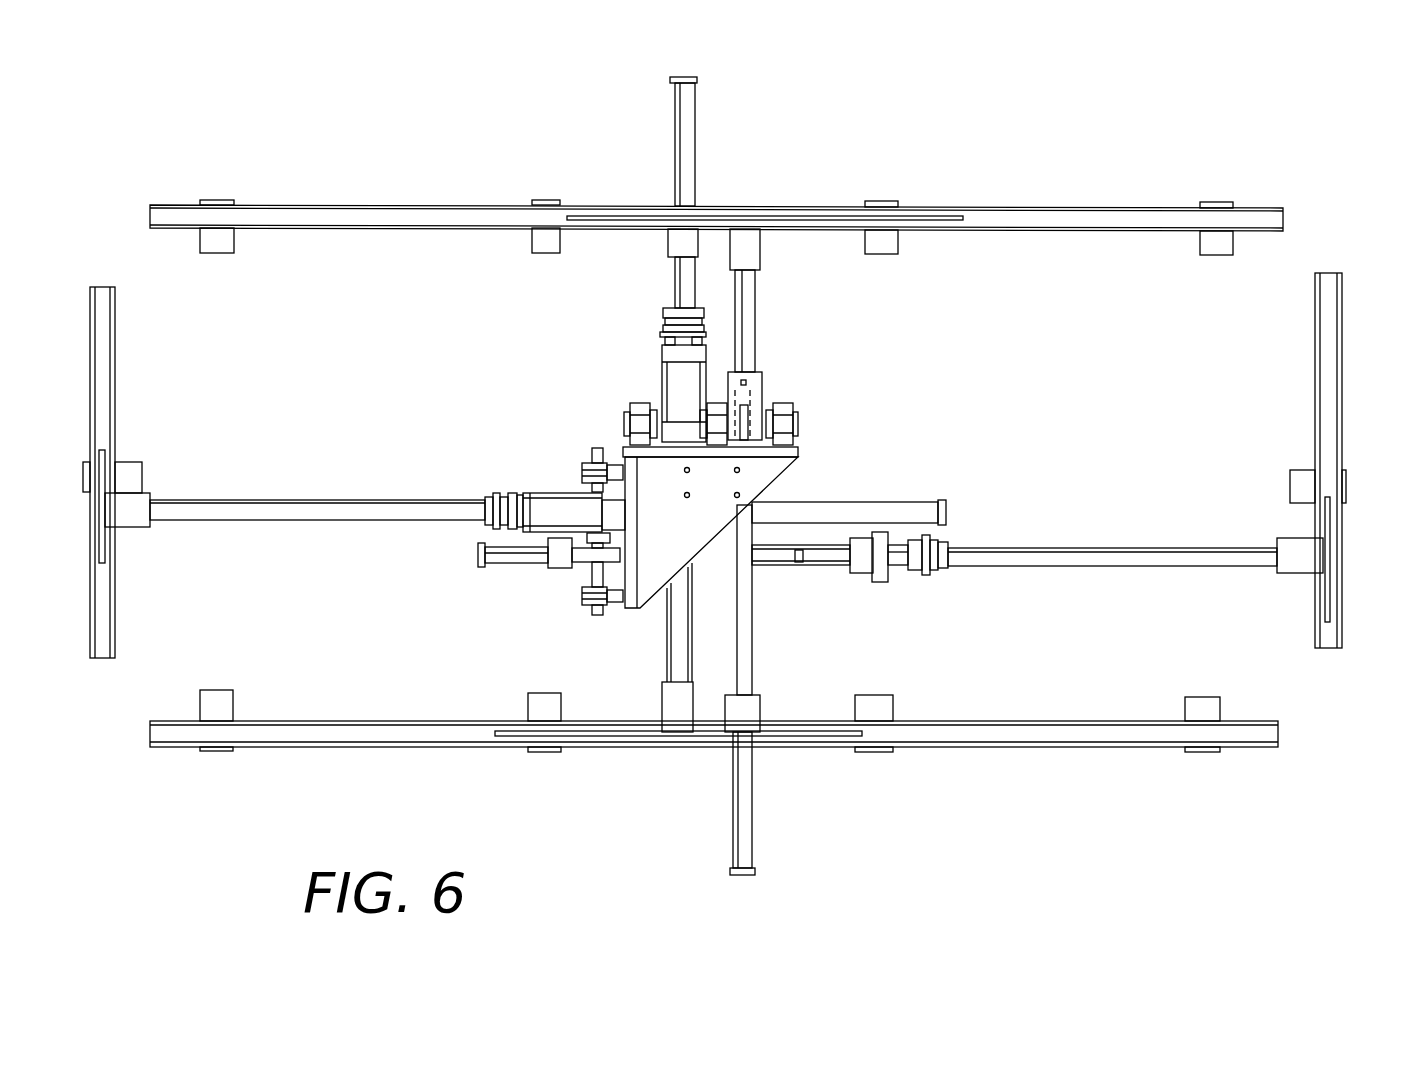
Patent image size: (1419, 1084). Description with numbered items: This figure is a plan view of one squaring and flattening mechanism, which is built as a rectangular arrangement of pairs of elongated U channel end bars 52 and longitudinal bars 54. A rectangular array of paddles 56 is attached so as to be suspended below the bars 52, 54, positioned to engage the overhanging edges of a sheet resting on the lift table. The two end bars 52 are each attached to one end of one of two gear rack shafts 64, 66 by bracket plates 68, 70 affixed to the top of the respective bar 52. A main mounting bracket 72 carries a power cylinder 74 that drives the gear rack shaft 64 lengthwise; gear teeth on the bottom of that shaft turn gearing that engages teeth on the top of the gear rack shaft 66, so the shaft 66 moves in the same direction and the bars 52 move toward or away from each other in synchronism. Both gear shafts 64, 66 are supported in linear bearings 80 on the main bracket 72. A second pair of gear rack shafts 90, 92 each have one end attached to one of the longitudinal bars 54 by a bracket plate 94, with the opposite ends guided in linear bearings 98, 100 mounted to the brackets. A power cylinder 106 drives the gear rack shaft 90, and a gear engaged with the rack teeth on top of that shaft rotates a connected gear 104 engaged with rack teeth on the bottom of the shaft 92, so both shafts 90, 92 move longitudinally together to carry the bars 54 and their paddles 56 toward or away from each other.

The end bar 52 is at (120, 330).
The longitudinal bar 54 is at (1095, 207).
The paddle 56 is at (232, 200).
The gear rack shaft 64 is at (335, 522).
The gear rack shaft 66 is at (1065, 545).
The bracket plate 68 is at (110, 556).
The bracket plate 70 is at (1328, 527).
The main mounting bracket 72 is at (717, 530).
The power cylinder 74 is at (555, 505).
The linear bearing 80 is at (578, 568).
The gear rack shaft 90 is at (680, 113).
The gear rack shaft 92 is at (745, 612).
The bracket plate 94 is at (940, 208).
The linear bearing 98 is at (688, 233).
The linear bearing 100 is at (742, 725).
The gear 104 is at (760, 385).
The power cylinder 106 is at (677, 377).